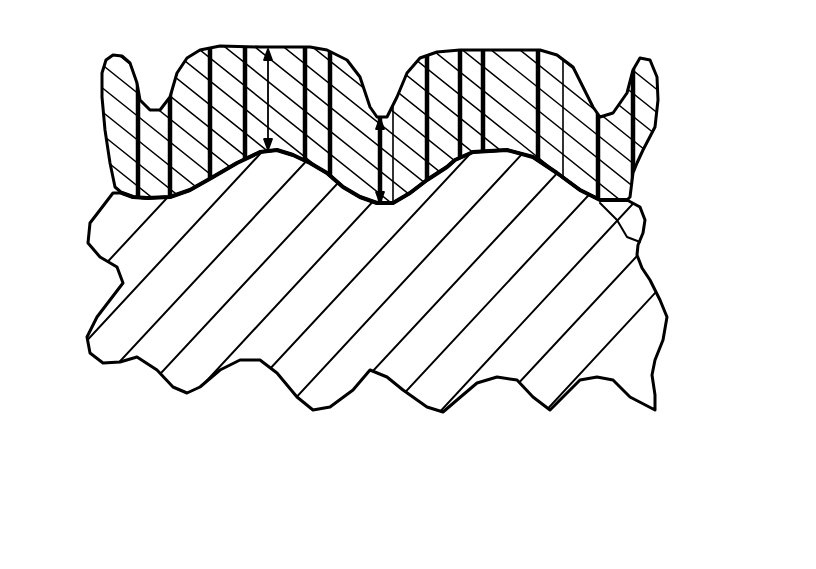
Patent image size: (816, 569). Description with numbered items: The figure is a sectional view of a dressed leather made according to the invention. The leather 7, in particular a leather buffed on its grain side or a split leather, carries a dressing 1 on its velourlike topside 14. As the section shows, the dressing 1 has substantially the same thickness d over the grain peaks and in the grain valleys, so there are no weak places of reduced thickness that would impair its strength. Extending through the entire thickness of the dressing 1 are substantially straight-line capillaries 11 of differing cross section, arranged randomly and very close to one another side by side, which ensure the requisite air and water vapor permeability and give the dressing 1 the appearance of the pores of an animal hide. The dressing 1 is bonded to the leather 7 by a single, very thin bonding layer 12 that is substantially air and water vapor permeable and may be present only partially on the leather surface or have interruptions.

The dressing 1 is at (383, 284).
The leather 7 is at (560, 307).
The capillaries 11 is at (177, 125).
The bonding layer 12 is at (627, 237).
The velourlike topside 14 is at (512, 97).